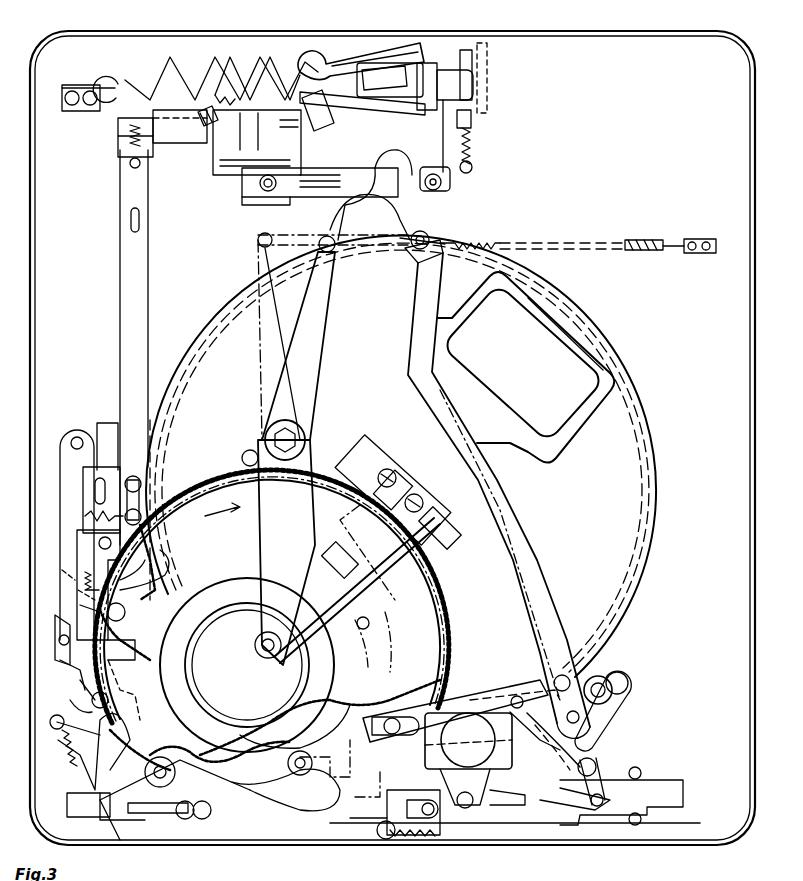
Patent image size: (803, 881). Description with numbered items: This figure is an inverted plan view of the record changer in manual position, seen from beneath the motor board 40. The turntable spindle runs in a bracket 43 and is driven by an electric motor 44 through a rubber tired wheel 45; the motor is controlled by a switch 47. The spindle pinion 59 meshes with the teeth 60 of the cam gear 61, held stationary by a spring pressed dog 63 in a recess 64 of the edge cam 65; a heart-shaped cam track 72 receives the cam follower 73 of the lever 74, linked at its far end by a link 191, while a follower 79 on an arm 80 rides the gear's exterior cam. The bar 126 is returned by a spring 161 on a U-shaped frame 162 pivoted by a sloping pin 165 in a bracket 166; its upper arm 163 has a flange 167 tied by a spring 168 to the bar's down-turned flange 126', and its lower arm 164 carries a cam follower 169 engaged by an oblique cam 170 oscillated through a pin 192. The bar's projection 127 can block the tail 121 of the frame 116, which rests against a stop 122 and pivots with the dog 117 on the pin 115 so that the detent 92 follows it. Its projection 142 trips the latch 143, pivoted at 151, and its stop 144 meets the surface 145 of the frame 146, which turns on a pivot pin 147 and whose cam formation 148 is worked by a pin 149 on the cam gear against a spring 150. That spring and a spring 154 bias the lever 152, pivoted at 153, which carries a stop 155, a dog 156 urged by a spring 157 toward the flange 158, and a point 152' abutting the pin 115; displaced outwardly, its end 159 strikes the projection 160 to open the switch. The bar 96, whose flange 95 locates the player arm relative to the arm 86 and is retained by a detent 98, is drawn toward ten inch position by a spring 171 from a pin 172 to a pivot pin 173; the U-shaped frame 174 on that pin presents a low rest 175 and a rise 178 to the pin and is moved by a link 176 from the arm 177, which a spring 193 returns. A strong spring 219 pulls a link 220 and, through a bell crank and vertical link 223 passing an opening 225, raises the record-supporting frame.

The motor board 40 is at (72, 232).
The electric motor 44 is at (517, 382).
The rubber tired wheel 45 is at (556, 328).
The down-turned flange 126' is at (88, 110).
The strong spring 219 is at (205, 62).
The bracket 166 is at (245, 60).
The link 220 is at (372, 60).
The vertically extending link 223 is at (315, 120).
The opening 225 is at (326, 120).
The cam follower 169 is at (406, 160).
The downwardly projecting pin 192 is at (440, 190).
The cam 170 is at (426, 232).
The spring 193 is at (480, 240).
The bar 126 is at (110, 347).
The spring 168 is at (118, 138).
The flange 167 is at (118, 157).
The upper arm 163 is at (178, 134).
The spring 161 is at (205, 137).
The pin 165 is at (258, 132).
The frame 162 is at (270, 197).
The lower arm 164 is at (338, 200).
The link 191 is at (330, 270).
The arm 177 is at (412, 300).
The link 176 is at (506, 498).
The teeth 60 is at (447, 592).
The cam gear 61 is at (252, 535).
The recess 64 is at (229, 502).
The cam 65 is at (242, 458).
The spring pressed dog 63 is at (265, 440).
The lever 74 is at (288, 556).
The bracket 43 is at (372, 592).
The cam follower 73 is at (268, 660).
The heart-shaped cam track 72 is at (222, 626).
The pinion 59 is at (392, 470).
The pivot 153 is at (78, 435).
The lever 152 is at (76, 535).
The down-turned stop 144 is at (108, 468).
The spring 150 is at (103, 500).
The pivot pin 147 is at (133, 526).
The surface 145 is at (150, 458).
The pivoted member 146 is at (98, 585).
The cam formation 148 is at (109, 631).
The spring 154 is at (148, 570).
The pin 149 is at (150, 580).
The down-turned projection 142 is at (170, 560).
The down-turned flange 158 is at (145, 640).
The pivot 151 is at (62, 570).
The latch 143 is at (78, 590).
The stop 155 is at (80, 605).
The dog 156 is at (55, 635).
The spring 157 is at (60, 660).
The stop 122 is at (80, 680).
The tail 121 is at (70, 700).
The dog 117 is at (50, 722).
The point 152' is at (38, 748).
The frame 116 is at (95, 760).
The down-turned projection 160 is at (67, 805).
The end 159 is at (100, 818).
The detent 92 is at (155, 821).
The projection 127 is at (120, 700).
The pin 115 is at (120, 725).
The arm 86 is at (157, 757).
The arm 80 is at (286, 781).
The cam follower 79 is at (325, 758).
The detent 98 is at (355, 790).
The bar 96 is at (515, 780).
The flange 95 is at (320, 715).
The switch 47 is at (475, 760).
The low rest 175 is at (528, 682).
The pin 172 is at (530, 696).
The pivot pin 173 is at (605, 676).
The U-shaped frame 174 is at (610, 712).
The spring 171 is at (580, 755).
The rise 178 is at (561, 761).